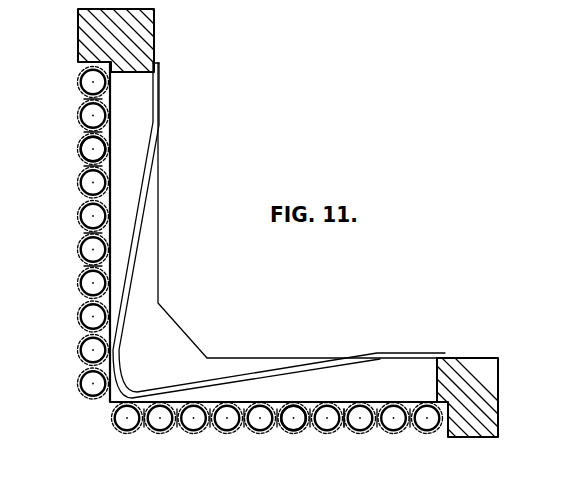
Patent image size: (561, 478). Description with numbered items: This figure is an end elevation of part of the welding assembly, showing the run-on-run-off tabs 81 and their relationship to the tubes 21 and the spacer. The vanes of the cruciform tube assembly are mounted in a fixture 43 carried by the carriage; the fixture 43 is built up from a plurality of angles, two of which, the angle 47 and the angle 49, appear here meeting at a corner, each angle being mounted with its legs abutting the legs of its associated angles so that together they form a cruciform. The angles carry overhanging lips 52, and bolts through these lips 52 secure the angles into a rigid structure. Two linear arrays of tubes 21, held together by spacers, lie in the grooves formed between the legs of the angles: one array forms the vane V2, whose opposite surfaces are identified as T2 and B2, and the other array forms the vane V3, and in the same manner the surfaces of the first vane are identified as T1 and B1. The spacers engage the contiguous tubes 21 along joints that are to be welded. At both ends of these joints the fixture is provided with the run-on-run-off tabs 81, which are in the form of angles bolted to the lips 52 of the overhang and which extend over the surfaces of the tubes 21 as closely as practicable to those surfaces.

The overhanging lip 52 is at (135, 32).
The run-on-run-off tab 81 is at (159, 92).
The angle 49 is at (156, 237).
The angle 47 is at (295, 357).
The fixture 43 is at (415, 341).
The tube 21 is at (79, 76).
The surface of vane V2 T2 is at (80, 166).
The vane V3 is at (80, 250).
The surface of vane V2 B2 is at (110, 132).
The surface of vane V1 T1 is at (341, 403).
The surface of vane V1 B1 is at (308, 430).
The vane V2 is at (349, 432).